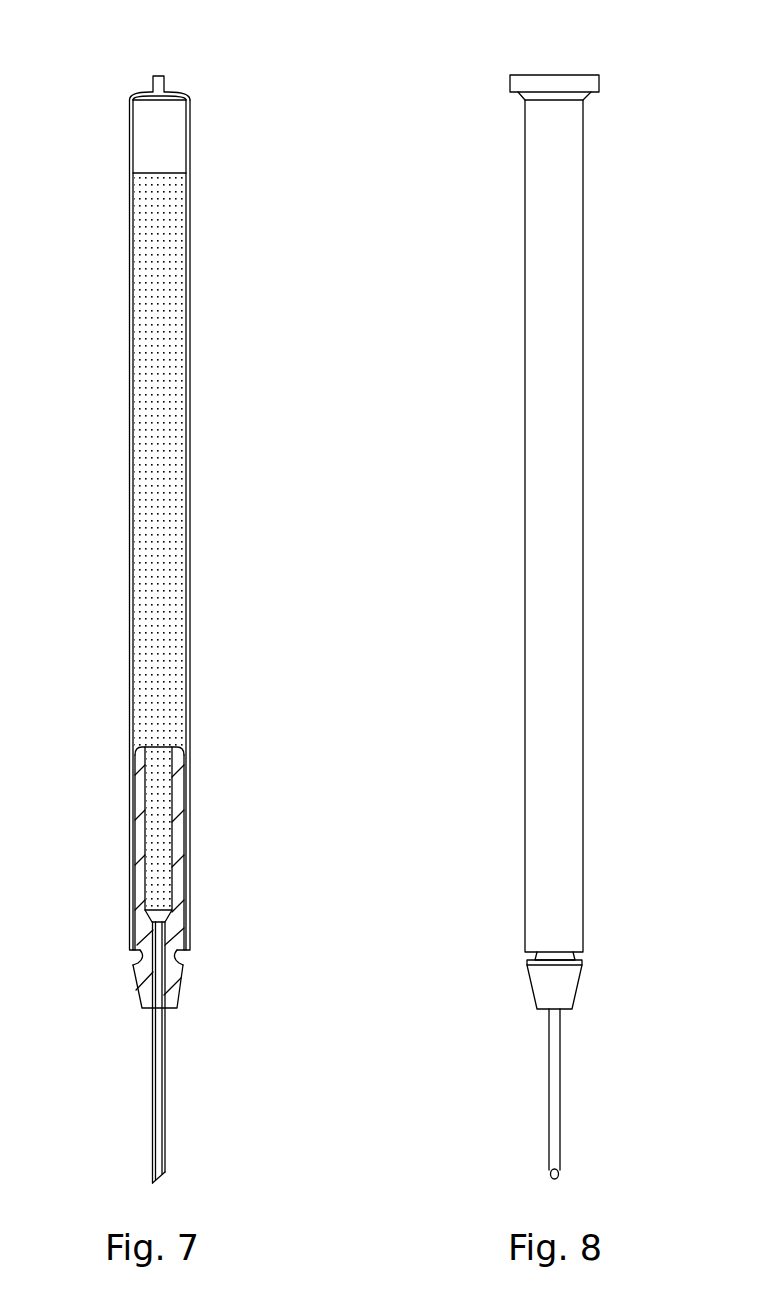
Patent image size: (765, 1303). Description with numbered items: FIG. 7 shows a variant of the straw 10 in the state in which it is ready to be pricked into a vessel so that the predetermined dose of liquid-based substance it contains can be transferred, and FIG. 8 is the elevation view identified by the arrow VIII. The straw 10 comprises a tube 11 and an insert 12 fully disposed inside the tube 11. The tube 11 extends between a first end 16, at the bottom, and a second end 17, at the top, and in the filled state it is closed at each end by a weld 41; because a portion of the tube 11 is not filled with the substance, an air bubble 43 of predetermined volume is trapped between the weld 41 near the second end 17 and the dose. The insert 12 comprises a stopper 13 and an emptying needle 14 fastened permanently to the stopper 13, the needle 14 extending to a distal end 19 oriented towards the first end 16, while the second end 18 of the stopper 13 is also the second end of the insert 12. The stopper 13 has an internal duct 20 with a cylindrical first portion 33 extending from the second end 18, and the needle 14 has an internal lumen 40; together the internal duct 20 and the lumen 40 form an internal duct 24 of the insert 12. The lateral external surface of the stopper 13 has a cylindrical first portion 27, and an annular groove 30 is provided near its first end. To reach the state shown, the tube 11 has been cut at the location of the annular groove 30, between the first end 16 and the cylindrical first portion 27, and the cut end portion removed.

In FIG. 7, the straw 10 is at (264, 157).
In FIG. 8, the straw 10 is at (443, 74).
In FIG. 7, the tube 11 is at (187, 353).
In FIG. 8, the tube 11 is at (525, 280).
In FIG. 7, the insert 12 is at (228, 988).
In FIG. 8, the insert 12 is at (503, 990).
In FIG. 7, the stopper 13 is at (178, 803).
In FIG. 8, the stopper 13 is at (562, 978).
In FIG. 7, the emptying needle 14 is at (166, 1128).
In FIG. 7, the first end of the tube 16 is at (124, 955).
In FIG. 8, the first end of the tube 16 is at (523, 953).
In FIG. 7, the second end of the tube 17 is at (189, 90).
In FIG. 8, the second end of the tube 17 is at (615, 75).
In FIG. 7, the second end of the insert and stopper 18 is at (163, 748).
In FIG. 7, the distal end of the needle 19 is at (160, 1177).
In FIG. 8, the distal end of the needle 19 is at (560, 1173).
In FIG. 7, the internal duct of the stopper 20 is at (166, 786).
In FIG. 7, the internal duct of the insert 24 is at (156, 1098).
In FIG. 8, the internal duct of the insert 24 is at (551, 1175).
In FIG. 7, the cylindrical first portion of the external surface 27 is at (134, 838).
In FIG. 7, the annular groove 30 is at (198, 957).
In FIG. 7, the cylindrical first portion of the internal duct 33 is at (151, 775).
In FIG. 7, the internal lumen 40 is at (156, 1063).
In FIG. 7, the weld 41 is at (157, 92).
In FIG. 8, the weld 41 is at (540, 81).
In FIG. 7, the air bubble 43 is at (136, 127).
In FIG. 7, the elevation view indicator VIII is at (198, 505).